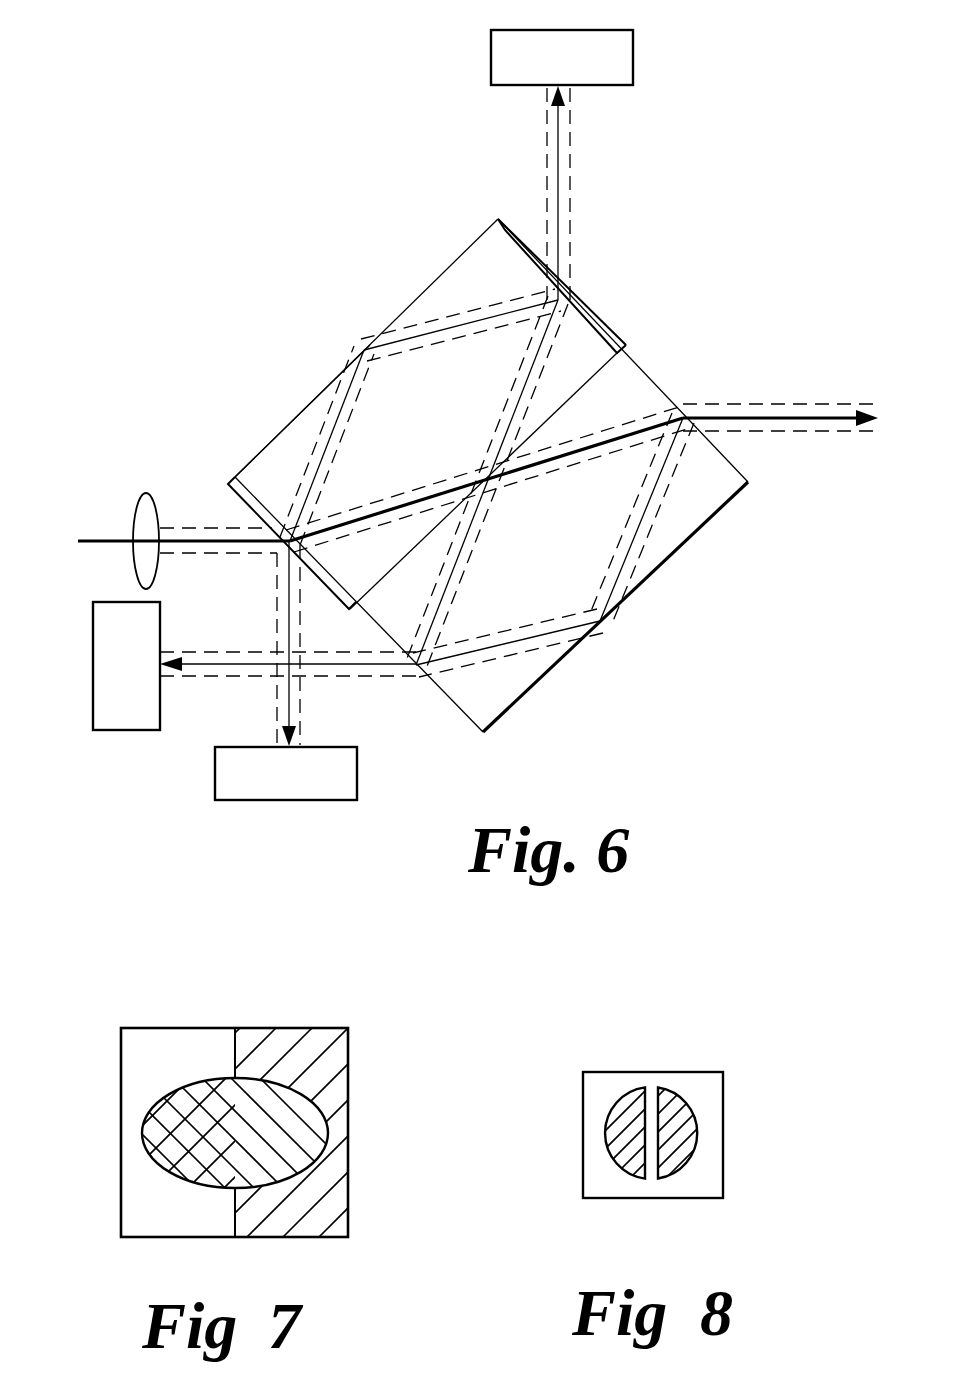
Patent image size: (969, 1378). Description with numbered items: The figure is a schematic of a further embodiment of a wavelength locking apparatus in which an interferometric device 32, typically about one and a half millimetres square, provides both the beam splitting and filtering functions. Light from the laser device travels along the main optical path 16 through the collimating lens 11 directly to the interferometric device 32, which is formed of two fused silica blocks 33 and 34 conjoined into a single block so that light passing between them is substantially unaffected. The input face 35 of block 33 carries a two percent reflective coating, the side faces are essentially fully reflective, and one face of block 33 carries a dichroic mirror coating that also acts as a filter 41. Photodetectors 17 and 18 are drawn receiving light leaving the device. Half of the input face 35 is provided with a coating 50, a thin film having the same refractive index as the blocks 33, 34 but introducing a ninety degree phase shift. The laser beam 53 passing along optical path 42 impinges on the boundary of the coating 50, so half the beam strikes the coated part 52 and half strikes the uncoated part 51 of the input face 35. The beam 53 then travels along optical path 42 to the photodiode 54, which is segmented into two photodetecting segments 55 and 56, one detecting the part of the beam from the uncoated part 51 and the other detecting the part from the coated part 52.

In FIG. 6, the collimating lens 11 is at (133, 520).
In FIG. 6, the main optical path 16 is at (200, 537).
In FIG. 6, the photodetector Pd1 17 is at (122, 713).
In FIG. 6, the photodetector Pd2 18 is at (633, 63).
In FIG. 6, the interferometric device 32 is at (716, 491).
In FIG. 6, the block 33 is at (425, 277).
In FIG. 6, the block 34 is at (553, 673).
In FIG. 6, the input face 35 is at (238, 470).
In FIG. 6, the filter 41 is at (499, 220).
In FIG. 6, the optical path 42 is at (290, 633).
In FIG. 6, the coating 50 is at (320, 576).
In FIG. 7, the coating 50 is at (318, 1058).
In FIG. 7, the uncoated part 51 is at (198, 1028).
In FIG. 7, the coated part 52 is at (293, 1028).
In FIG. 6, the laser beam 53 is at (298, 708).
In FIG. 7, the laser beam 53 is at (158, 1135).
In FIG. 6, the photodiode 54 is at (317, 800).
In FIG. 8, the photodiode 54 is at (603, 1077).
In FIG. 8, the photodetecting segment 55 is at (618, 1140).
In FIG. 8, the photodetecting segment 56 is at (688, 1143).